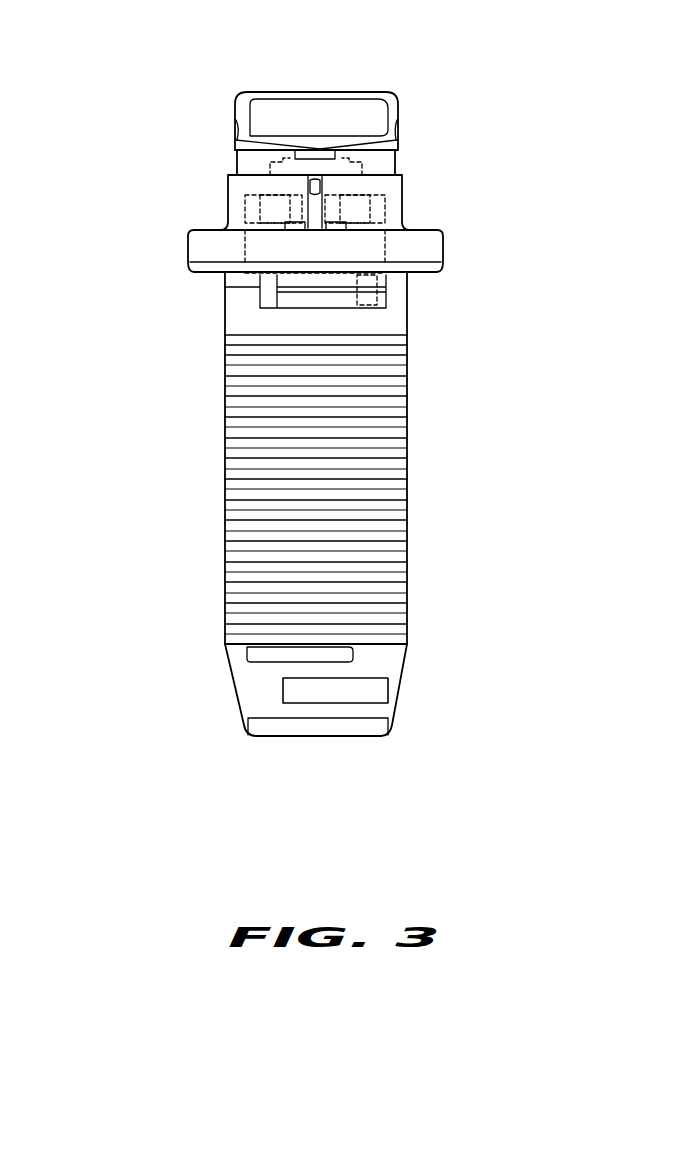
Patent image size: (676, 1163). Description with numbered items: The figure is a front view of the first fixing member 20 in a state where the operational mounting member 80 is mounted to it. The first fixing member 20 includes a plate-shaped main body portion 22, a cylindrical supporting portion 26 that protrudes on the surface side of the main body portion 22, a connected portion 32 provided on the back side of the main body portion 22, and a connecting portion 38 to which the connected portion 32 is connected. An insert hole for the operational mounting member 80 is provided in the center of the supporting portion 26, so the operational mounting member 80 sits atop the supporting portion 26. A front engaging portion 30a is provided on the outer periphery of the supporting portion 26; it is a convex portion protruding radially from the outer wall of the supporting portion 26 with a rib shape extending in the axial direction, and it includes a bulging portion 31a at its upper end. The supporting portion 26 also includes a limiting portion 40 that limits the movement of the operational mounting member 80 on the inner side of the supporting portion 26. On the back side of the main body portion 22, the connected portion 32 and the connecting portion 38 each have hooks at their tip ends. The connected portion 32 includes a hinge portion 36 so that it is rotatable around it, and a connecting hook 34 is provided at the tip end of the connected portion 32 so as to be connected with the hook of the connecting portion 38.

The operational mounting member 80 is at (320, 103).
The supporting portion 26 is at (237, 165).
The bulging portion 31a is at (330, 187).
The front engaging portion 30a is at (315, 205).
The main body portion 22 is at (432, 246).
The connecting portion 38 is at (390, 298).
The hinge portion 36 is at (395, 320).
The connected portion 32 is at (375, 460).
The first fixing member 20 is at (225, 477).
The connecting hook 34 is at (383, 688).
The limiting portion 40 is at (257, 652).